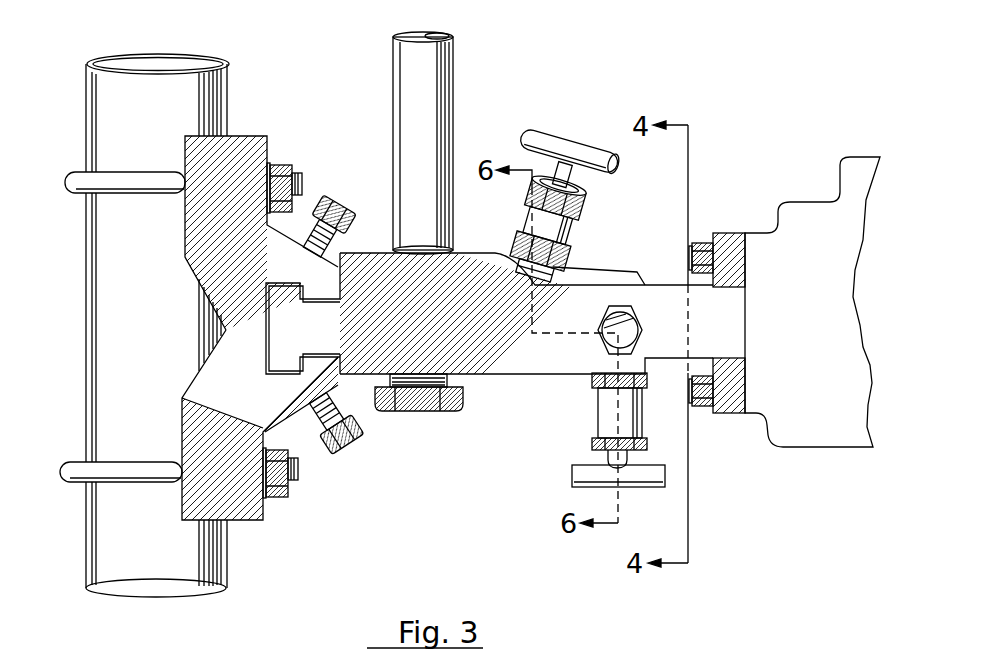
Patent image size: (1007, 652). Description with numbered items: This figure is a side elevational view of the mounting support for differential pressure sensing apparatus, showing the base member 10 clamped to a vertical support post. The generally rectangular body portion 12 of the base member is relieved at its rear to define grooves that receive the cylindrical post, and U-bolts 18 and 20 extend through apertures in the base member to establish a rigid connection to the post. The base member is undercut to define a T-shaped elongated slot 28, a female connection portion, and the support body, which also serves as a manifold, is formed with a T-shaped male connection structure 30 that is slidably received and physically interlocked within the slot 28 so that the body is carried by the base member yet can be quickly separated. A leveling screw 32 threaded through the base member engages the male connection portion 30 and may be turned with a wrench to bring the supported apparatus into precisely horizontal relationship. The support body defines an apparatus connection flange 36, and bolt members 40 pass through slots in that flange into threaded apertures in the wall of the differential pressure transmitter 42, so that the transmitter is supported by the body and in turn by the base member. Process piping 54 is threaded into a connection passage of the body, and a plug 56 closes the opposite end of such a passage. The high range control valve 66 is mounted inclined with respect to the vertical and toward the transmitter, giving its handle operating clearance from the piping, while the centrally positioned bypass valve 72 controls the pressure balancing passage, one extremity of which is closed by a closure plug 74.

The base member 10 is at (435, 235).
The rectangular body portion 12 is at (197, 218).
The U-bolt 18 is at (127, 180).
The U-bolt 20 is at (83, 485).
The T-shaped elongated slot 28 is at (283, 285).
The T-shaped male connection structure 30 is at (280, 335).
The leveling screw 32 is at (330, 448).
The apparatus connection flange 36 is at (725, 243).
The bolt member 40 is at (702, 408).
The differential pressure transmitter 42 is at (840, 427).
The process piping 54 is at (413, 73).
The plug 56 is at (417, 400).
The high range control valve 66 is at (550, 242).
The bypass valve 72 is at (608, 412).
The closure plug 74 is at (600, 345).